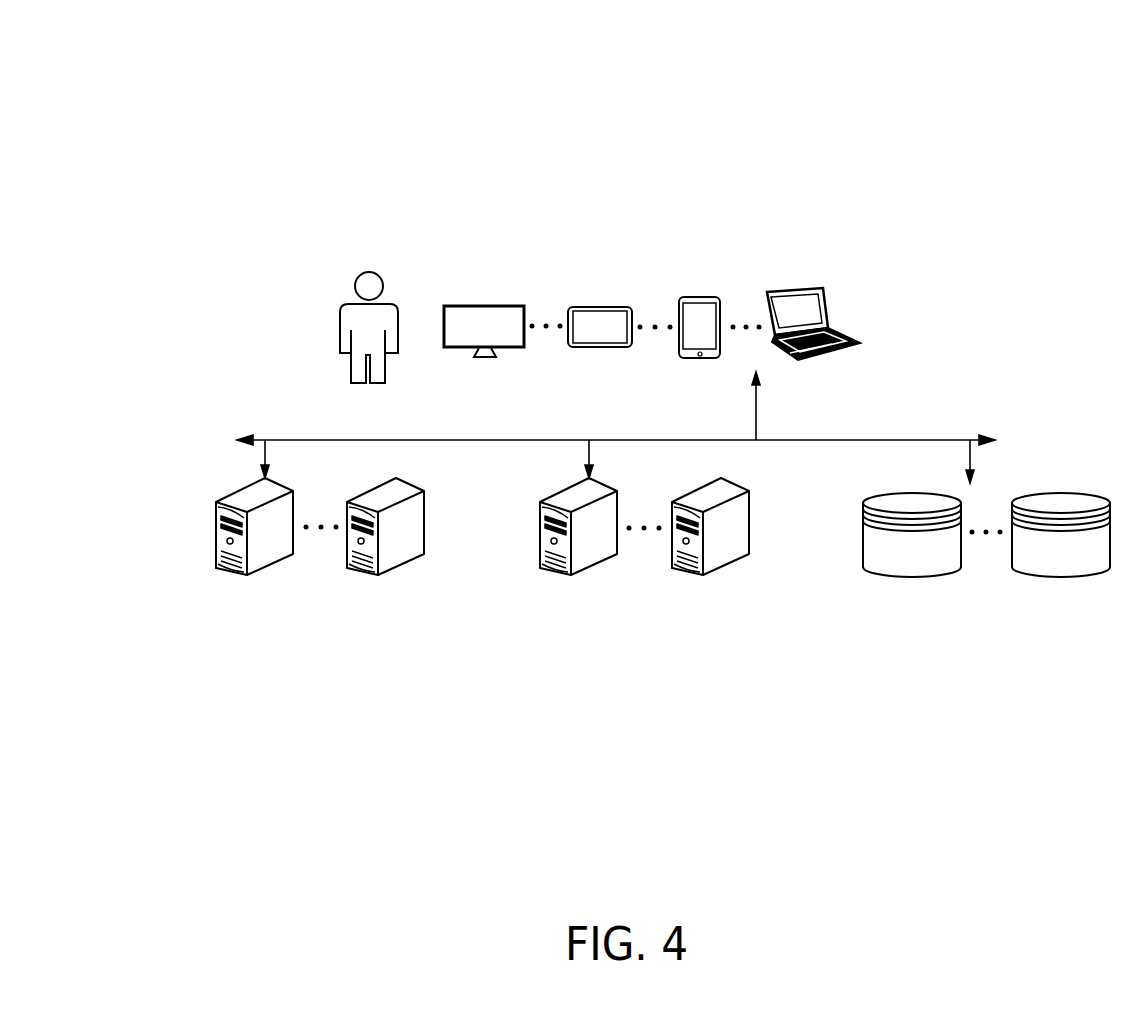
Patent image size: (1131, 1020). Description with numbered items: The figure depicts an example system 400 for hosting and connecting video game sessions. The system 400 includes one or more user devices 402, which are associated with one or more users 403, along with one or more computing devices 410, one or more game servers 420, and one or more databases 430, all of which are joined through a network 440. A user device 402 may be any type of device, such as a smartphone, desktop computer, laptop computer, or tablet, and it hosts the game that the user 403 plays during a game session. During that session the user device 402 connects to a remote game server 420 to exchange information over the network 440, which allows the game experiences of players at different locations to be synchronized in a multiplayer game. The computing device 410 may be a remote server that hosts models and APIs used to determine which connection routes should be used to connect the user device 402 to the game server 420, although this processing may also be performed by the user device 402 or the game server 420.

The system 400 is at (303, 88).
The user device 402 is at (913, 275).
The user 403 is at (367, 269).
The computing device 410 is at (324, 595).
The game server 420 is at (647, 597).
The database 430 is at (955, 600).
The network 440 is at (851, 440).